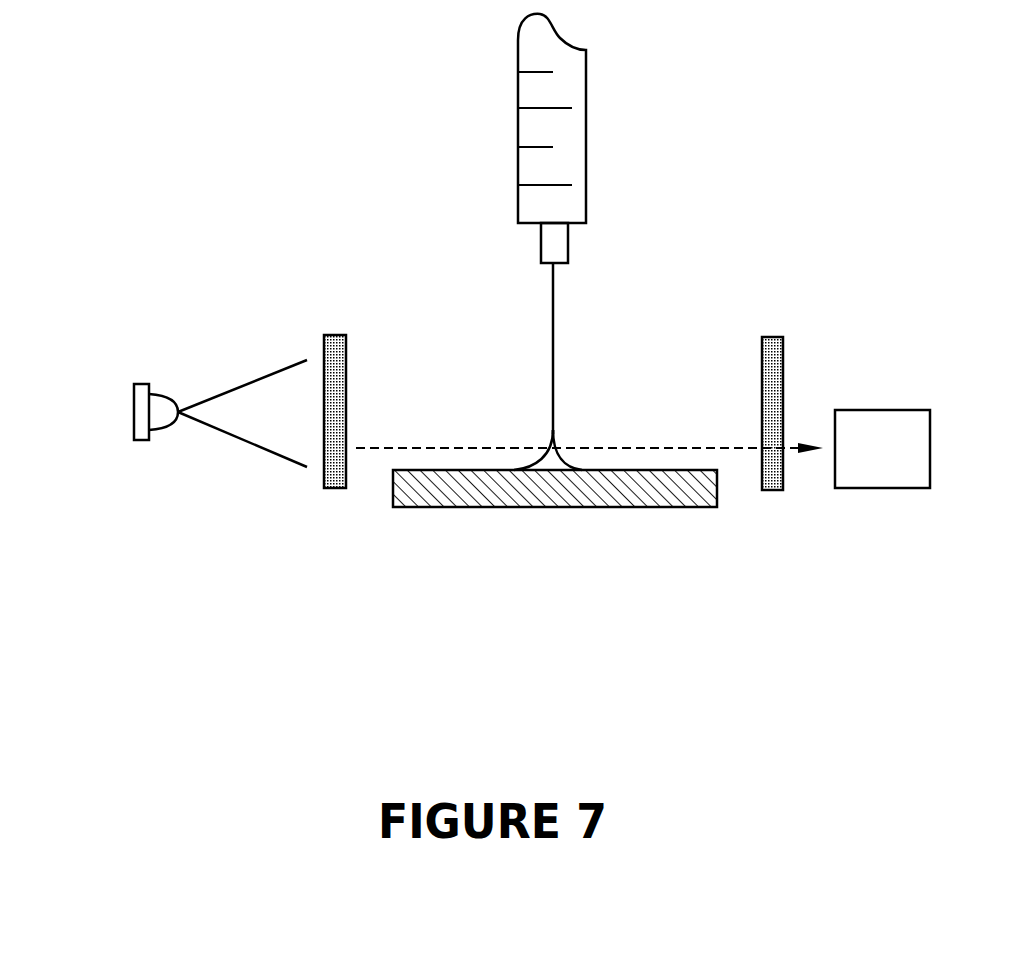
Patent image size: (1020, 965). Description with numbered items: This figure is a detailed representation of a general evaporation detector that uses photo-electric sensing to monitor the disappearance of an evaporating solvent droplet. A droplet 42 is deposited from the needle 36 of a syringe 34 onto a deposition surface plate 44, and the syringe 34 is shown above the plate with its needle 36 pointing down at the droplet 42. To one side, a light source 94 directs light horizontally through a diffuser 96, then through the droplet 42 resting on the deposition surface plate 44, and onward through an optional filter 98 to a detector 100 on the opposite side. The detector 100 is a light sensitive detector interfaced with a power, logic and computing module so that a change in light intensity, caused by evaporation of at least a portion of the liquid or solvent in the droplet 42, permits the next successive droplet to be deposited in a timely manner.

The syringe 34 is at (517, 128).
The needle 36 is at (551, 350).
The droplet 42 is at (550, 435).
The deposition surface plate 44 is at (475, 468).
The light source 94 is at (138, 382).
The diffuser 96 is at (332, 333).
The optional filter 98 is at (770, 335).
The detector 100 is at (877, 408).